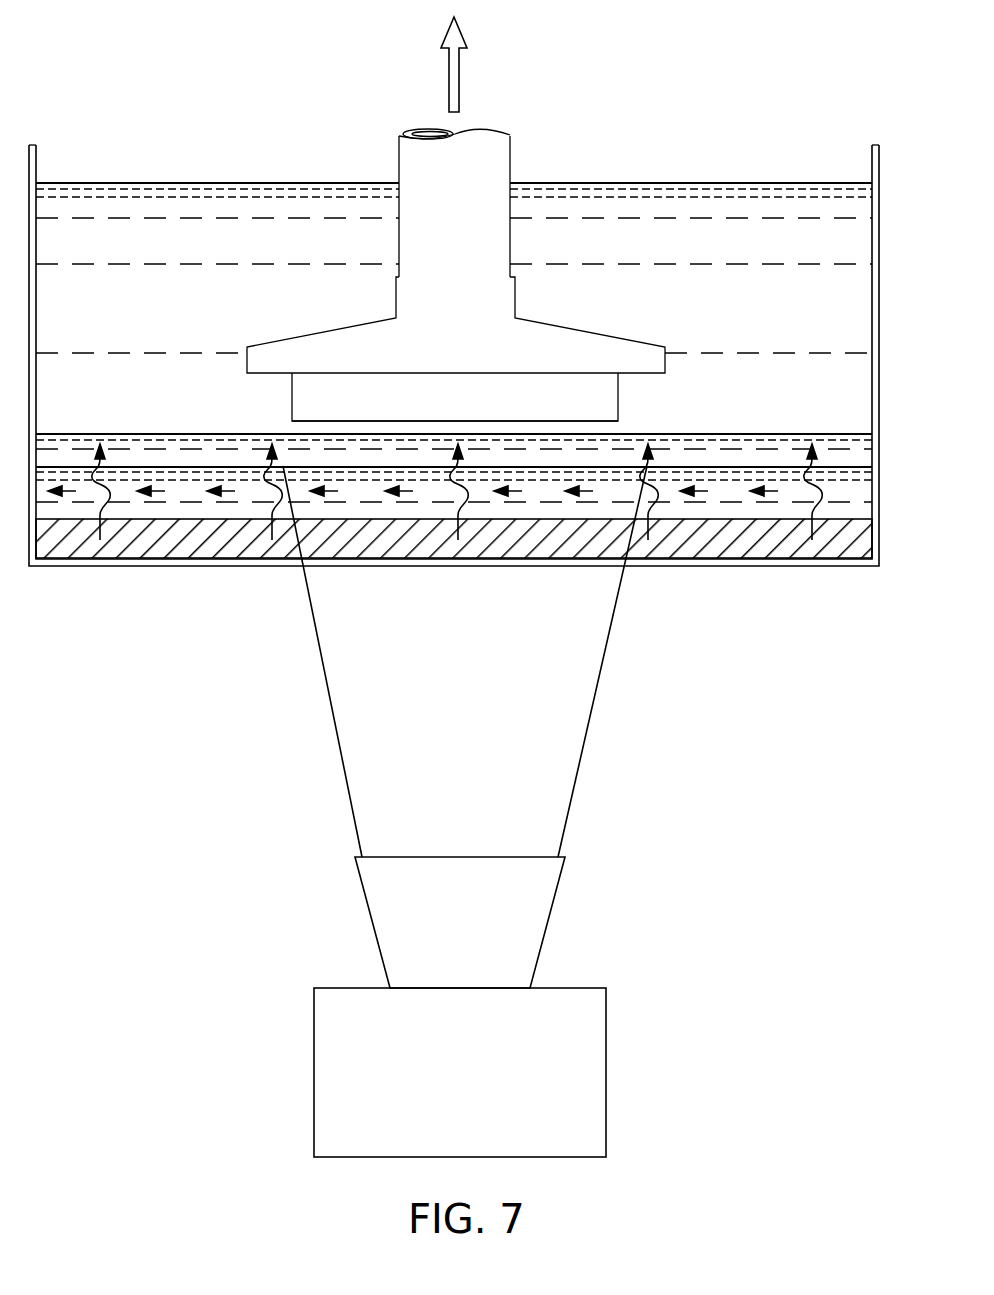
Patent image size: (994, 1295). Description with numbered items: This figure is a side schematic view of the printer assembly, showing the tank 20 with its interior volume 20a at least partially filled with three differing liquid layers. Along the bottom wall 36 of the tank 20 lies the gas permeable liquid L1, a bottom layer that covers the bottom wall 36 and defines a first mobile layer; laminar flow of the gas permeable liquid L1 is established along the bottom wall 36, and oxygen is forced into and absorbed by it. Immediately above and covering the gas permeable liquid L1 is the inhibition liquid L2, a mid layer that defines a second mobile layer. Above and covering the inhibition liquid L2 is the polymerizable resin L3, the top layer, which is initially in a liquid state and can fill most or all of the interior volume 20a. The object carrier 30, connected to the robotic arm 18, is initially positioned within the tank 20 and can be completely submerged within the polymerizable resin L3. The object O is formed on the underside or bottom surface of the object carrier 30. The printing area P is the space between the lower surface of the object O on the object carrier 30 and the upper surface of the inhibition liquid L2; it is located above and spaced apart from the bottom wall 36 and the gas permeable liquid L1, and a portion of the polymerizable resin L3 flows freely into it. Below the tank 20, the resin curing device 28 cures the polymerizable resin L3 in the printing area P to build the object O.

The robotic arm 18 is at (427, 172).
The tank 20 is at (876, 136).
The interior volume 20a is at (632, 172).
The resin curing device 28 is at (314, 1042).
The object carrier 30 is at (570, 350).
The bottom wall 36 is at (541, 540).
The gas permeable liquid L1 is at (848, 491).
The inhibition liquid L2 is at (843, 456).
The polymerizable resin L3 is at (833, 395).
The object O is at (593, 397).
The printing area P is at (588, 427).